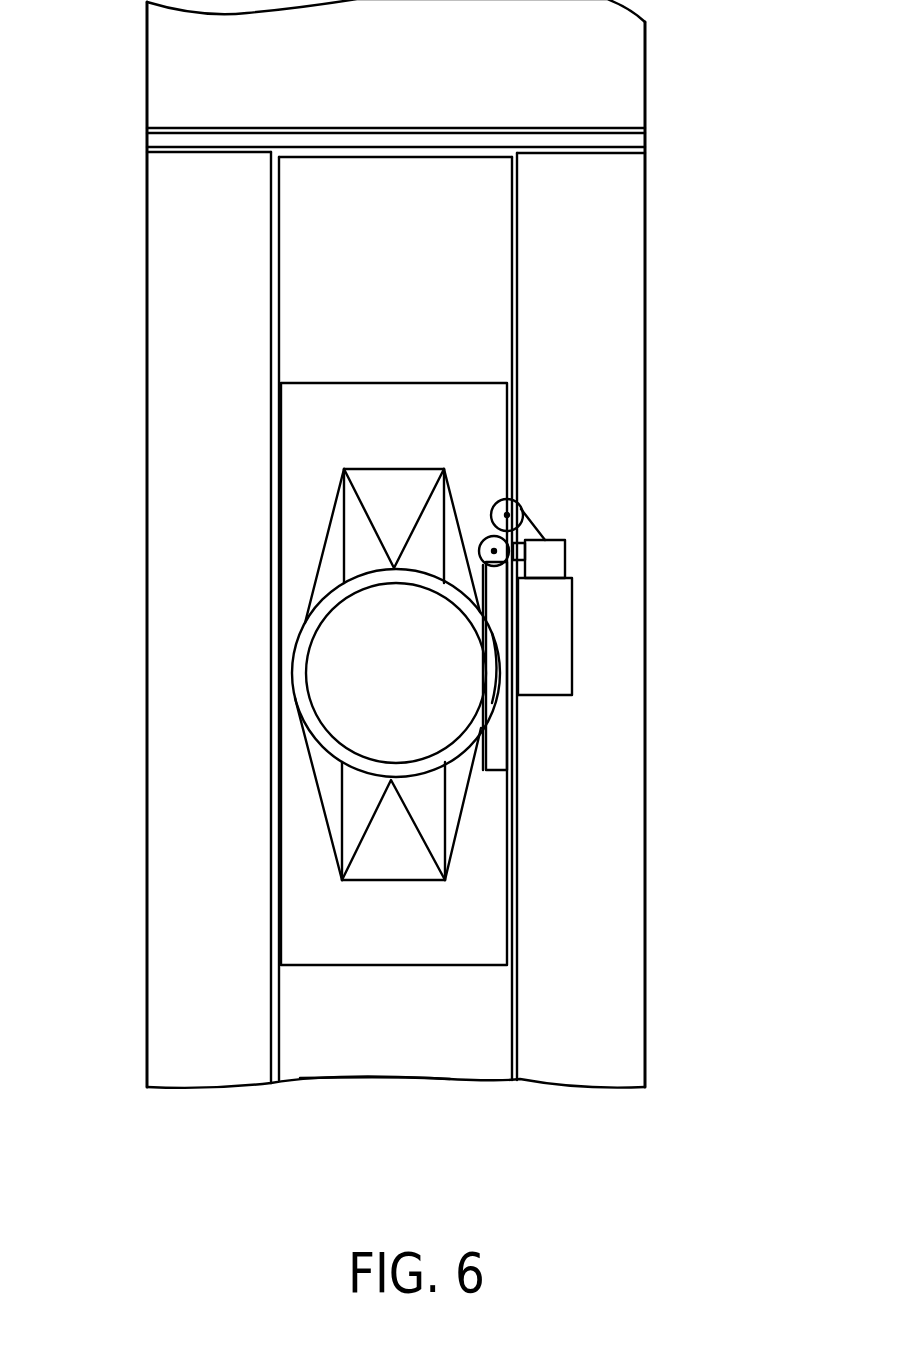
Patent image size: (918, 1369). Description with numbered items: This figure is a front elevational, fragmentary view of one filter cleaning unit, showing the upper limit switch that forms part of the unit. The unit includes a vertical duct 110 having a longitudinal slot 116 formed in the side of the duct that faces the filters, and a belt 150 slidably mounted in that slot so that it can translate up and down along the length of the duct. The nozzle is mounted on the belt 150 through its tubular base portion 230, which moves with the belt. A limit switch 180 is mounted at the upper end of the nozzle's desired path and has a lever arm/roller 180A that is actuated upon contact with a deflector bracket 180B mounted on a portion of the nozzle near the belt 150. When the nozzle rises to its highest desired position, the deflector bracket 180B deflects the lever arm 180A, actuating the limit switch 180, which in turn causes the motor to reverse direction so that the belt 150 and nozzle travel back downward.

The vertical duct 110 is at (632, 412).
The longitudinal slot 116 is at (455, 1060).
The belt 150 is at (483, 240).
The limit switch 180 is at (558, 615).
The lever arm/roller 180A is at (487, 530).
The deflector bracket 180B is at (488, 770).
The tubular base portion 230 is at (327, 562).